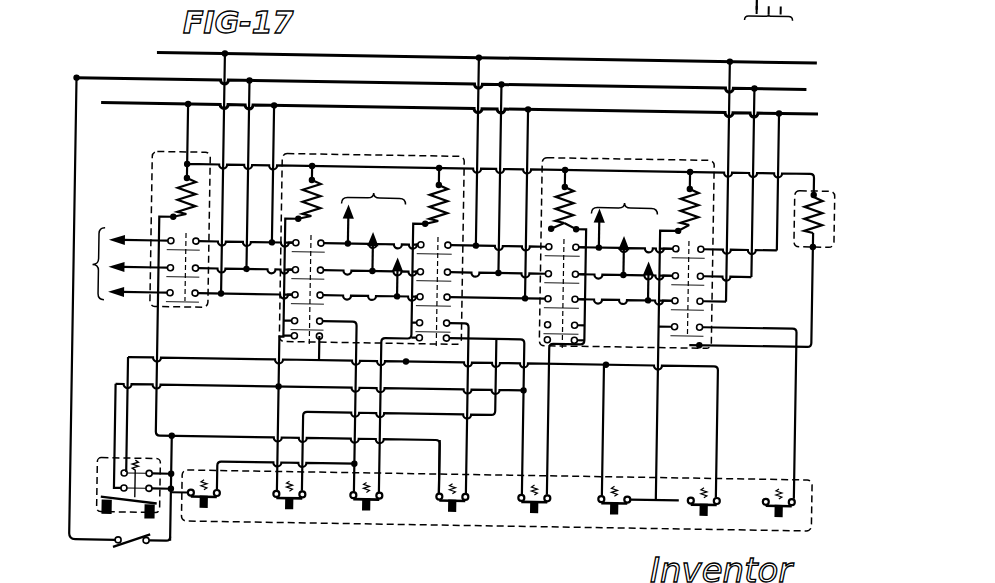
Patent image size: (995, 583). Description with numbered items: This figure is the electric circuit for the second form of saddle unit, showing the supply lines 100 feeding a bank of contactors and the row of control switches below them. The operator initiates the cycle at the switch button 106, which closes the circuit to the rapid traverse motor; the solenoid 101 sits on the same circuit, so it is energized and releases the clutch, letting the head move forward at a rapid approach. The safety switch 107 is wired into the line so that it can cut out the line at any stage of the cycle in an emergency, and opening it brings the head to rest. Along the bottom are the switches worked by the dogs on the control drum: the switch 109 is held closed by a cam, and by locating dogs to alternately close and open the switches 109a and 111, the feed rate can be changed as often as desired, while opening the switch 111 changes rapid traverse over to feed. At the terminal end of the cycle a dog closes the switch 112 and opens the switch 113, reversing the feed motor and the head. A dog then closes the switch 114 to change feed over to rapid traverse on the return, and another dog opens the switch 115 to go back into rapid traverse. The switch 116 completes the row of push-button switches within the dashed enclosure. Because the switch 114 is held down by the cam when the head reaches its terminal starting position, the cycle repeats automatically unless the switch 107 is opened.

The supply lines 100 is at (446, 59).
The solenoid 101 is at (833, 240).
The switch button 106 is at (115, 495).
The safety switch 107 is at (152, 551).
The switch 109 is at (619, 516).
The switch 109a is at (708, 518).
The switch 111 is at (783, 512).
The switch 112 is at (371, 512).
The switch 113 is at (456, 512).
The switch 114 is at (539, 514).
The switch 115 is at (294, 511).
The push-button switch 116 is at (209, 510).